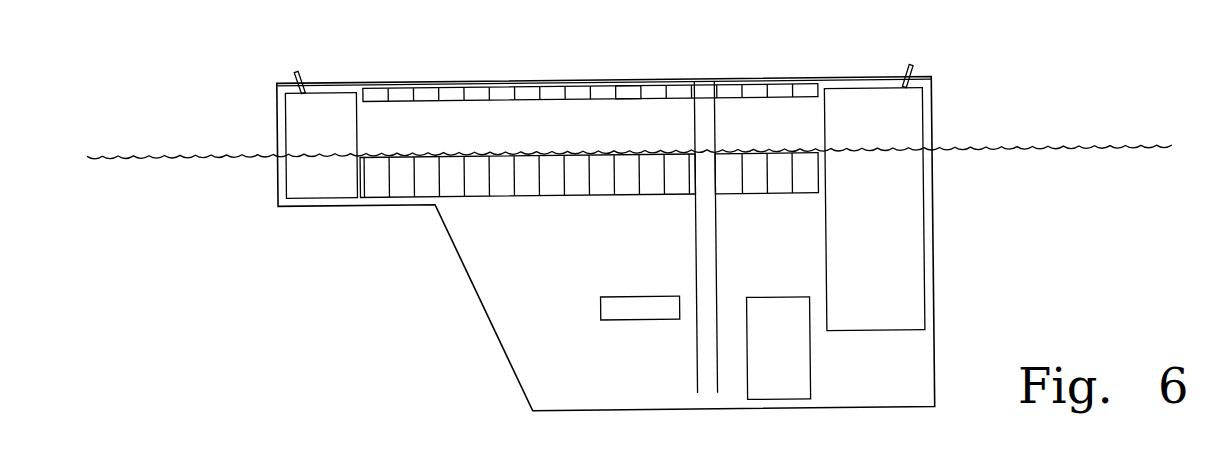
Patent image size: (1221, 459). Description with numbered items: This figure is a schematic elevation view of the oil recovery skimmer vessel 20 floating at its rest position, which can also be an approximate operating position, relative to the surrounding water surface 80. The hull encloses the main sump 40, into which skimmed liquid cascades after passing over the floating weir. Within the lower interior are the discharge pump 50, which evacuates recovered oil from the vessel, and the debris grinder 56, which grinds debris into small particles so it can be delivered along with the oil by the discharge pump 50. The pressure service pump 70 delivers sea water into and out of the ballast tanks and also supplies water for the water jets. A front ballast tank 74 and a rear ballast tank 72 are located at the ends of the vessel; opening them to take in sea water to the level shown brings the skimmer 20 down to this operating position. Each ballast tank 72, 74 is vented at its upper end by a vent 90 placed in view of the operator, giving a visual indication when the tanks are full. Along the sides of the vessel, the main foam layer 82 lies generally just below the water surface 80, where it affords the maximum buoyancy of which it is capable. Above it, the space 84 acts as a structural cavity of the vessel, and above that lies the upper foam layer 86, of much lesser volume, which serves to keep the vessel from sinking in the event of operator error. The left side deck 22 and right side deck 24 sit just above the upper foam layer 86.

The oil recovery skimmer vessel 20 is at (666, 244).
The left side deck 22 is at (604, 54).
The right side deck 24 is at (765, 80).
The main sump 40 is at (563, 272).
The discharge pump 50 is at (828, 348).
The debris grinder 56 is at (613, 314).
The pressure service pump 70 is at (808, 365).
The rear ballast tank 72 is at (910, 261).
The front ballast tank 74 is at (293, 129).
The water surface 80 is at (140, 152).
The main foam layer 82 is at (400, 194).
The space above main foam layer 84 is at (590, 70).
The upper foam layer 86 is at (623, 92).
The vent 90 is at (295, 74).